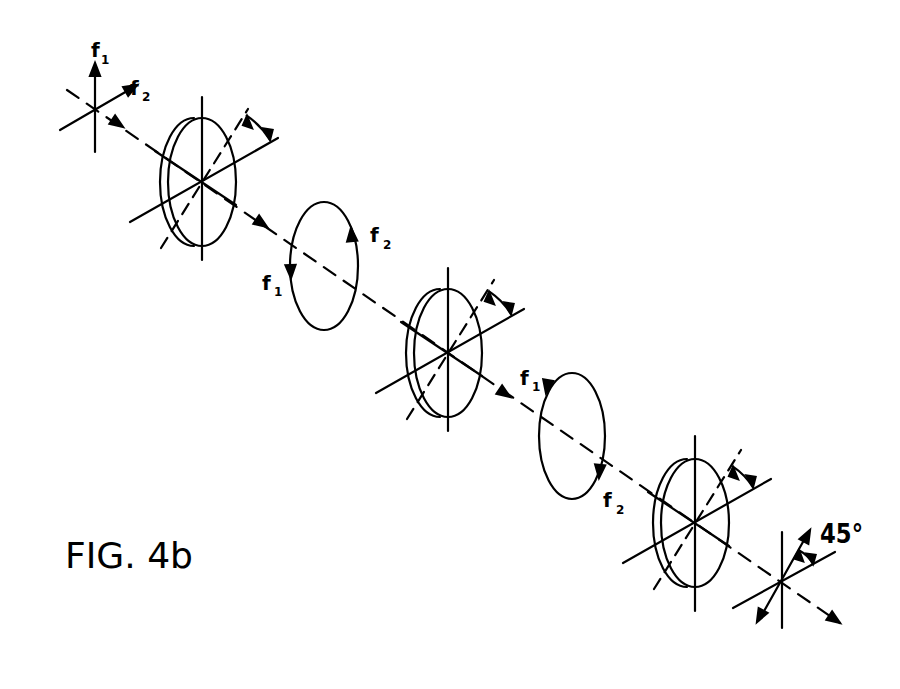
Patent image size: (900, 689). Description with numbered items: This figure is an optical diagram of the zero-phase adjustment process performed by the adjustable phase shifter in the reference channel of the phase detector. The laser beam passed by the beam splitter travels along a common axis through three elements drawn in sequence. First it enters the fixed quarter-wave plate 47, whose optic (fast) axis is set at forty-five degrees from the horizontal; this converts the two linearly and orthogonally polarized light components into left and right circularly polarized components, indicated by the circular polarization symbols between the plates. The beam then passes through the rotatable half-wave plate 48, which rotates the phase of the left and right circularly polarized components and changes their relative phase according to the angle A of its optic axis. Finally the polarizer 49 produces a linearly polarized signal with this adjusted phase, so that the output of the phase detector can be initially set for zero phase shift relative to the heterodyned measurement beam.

The fixed quarter-wave plate 47 is at (158, 177).
The rotatable half-wave plate 48 is at (405, 341).
The polarizer 49 is at (653, 529).